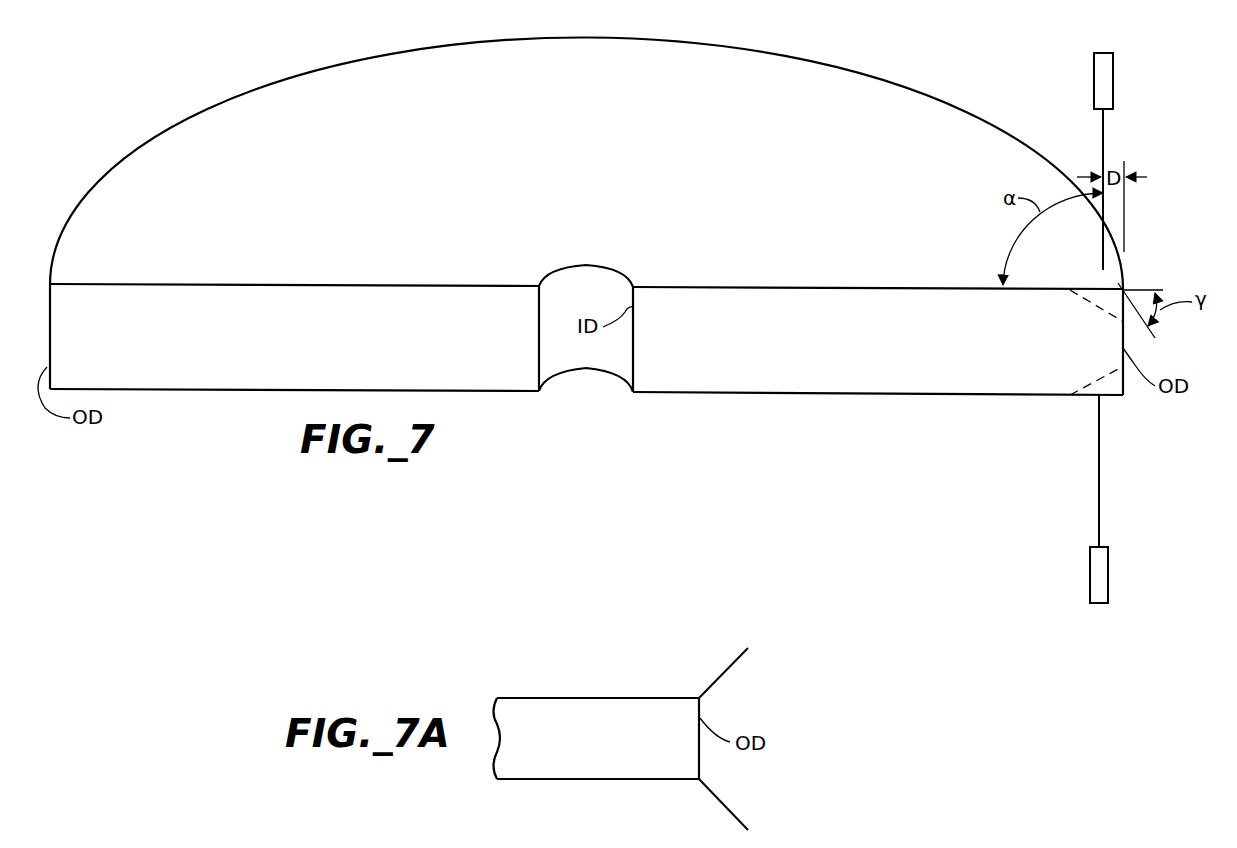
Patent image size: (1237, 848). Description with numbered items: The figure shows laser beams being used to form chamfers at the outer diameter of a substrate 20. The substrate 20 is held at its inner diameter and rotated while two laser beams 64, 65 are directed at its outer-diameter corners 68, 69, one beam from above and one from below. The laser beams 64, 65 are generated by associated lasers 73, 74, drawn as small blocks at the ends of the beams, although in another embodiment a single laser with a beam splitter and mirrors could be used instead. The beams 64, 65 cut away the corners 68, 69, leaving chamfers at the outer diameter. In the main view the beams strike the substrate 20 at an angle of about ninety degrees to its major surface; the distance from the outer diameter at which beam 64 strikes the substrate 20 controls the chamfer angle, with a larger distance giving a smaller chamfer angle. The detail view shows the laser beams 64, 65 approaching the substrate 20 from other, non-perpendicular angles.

In FIG. 7, the substrate 20 is at (928, 94).
In FIG. 7A, the substrate 20 is at (545, 705).
In FIG. 7, the laser beam 64 is at (1101, 132).
In FIG. 7A, the laser beam 64 is at (728, 672).
In FIG. 7, the laser beam 65 is at (1097, 510).
In FIG. 7A, the laser beam 65 is at (725, 805).
In FIG. 7, the corner 68 is at (1123, 396).
In FIG. 7, the corner 69 is at (1127, 287).
In FIG. 7, the laser 73 is at (1094, 80).
In FIG. 7, the laser 74 is at (1088, 580).